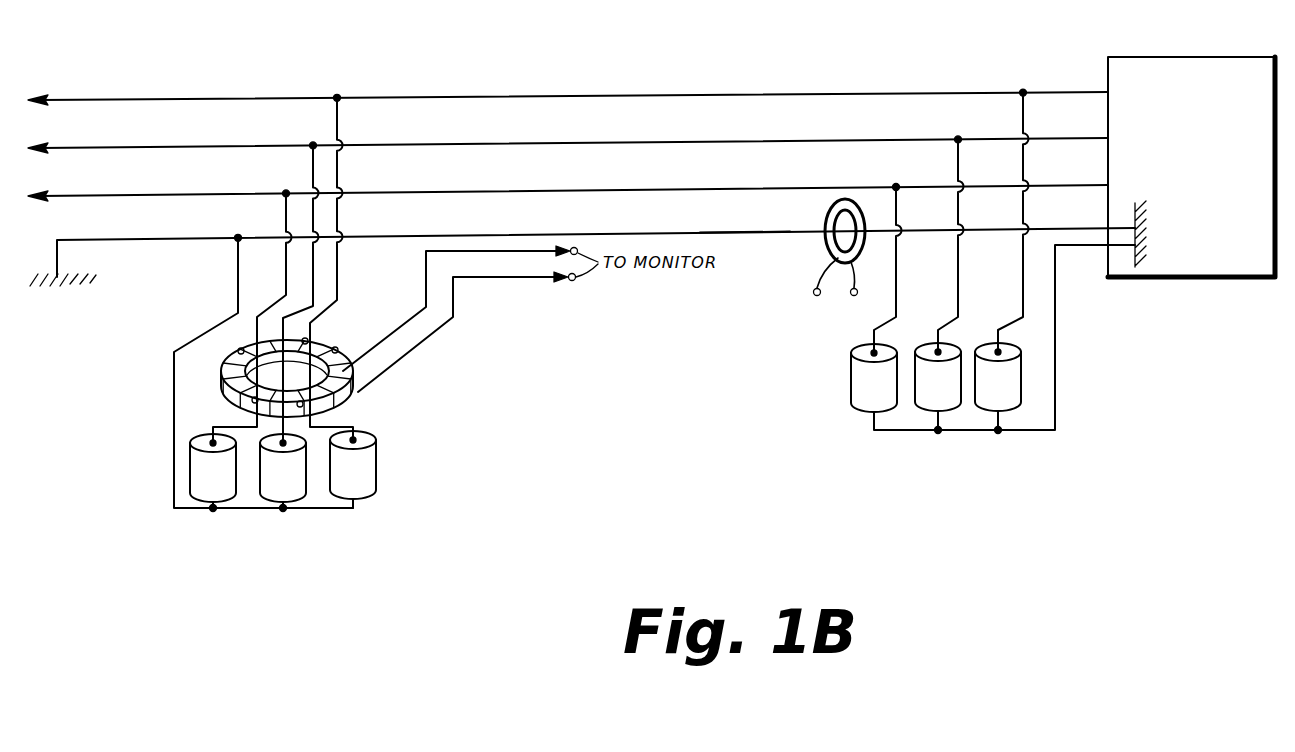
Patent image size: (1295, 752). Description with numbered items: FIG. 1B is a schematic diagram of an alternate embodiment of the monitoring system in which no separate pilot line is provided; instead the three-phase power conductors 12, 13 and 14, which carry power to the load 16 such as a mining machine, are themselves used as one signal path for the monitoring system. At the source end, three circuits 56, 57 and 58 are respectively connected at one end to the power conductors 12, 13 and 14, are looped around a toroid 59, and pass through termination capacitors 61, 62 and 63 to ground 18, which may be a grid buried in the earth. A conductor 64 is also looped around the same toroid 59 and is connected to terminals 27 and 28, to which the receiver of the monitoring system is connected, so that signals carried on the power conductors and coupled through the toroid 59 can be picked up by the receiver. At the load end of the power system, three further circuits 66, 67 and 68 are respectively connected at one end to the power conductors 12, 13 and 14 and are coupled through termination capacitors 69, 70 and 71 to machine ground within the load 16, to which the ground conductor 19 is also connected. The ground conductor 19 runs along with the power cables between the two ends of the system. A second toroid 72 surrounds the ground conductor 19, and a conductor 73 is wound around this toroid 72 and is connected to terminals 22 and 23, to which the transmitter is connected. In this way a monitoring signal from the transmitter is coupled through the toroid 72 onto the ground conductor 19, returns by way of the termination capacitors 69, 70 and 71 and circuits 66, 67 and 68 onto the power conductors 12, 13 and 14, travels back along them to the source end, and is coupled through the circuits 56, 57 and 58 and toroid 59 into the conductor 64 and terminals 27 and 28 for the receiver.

The power transmission cable 12 is at (97, 99).
The power transmission cable 13 is at (96, 147).
The power transmission cable 14 is at (88, 195).
The load 16 is at (1235, 65).
The ground 18 is at (75, 272).
The ground conductor 19 is at (800, 230).
The terminal 22 is at (851, 297).
The terminal 23 is at (810, 297).
The terminal 27 is at (574, 247).
The terminal 28 is at (572, 281).
The circuit 56 is at (334, 117).
The circuit 57 is at (310, 164).
The circuit 58 is at (284, 213).
The toroid 59 is at (225, 378).
The termination capacitor 61 is at (340, 495).
The termination capacitor 62 is at (274, 498).
The termination capacitor 63 is at (203, 498).
The conductor 64 is at (423, 335).
The circuit 66 is at (1027, 264).
The circuit 67 is at (960, 256).
The circuit 68 is at (898, 256).
The termination capacitor 69 is at (993, 405).
The termination capacitor 70 is at (934, 405).
The termination capacitor 71 is at (862, 405).
The toroid 72 is at (858, 200).
The conductor 73 is at (809, 282).